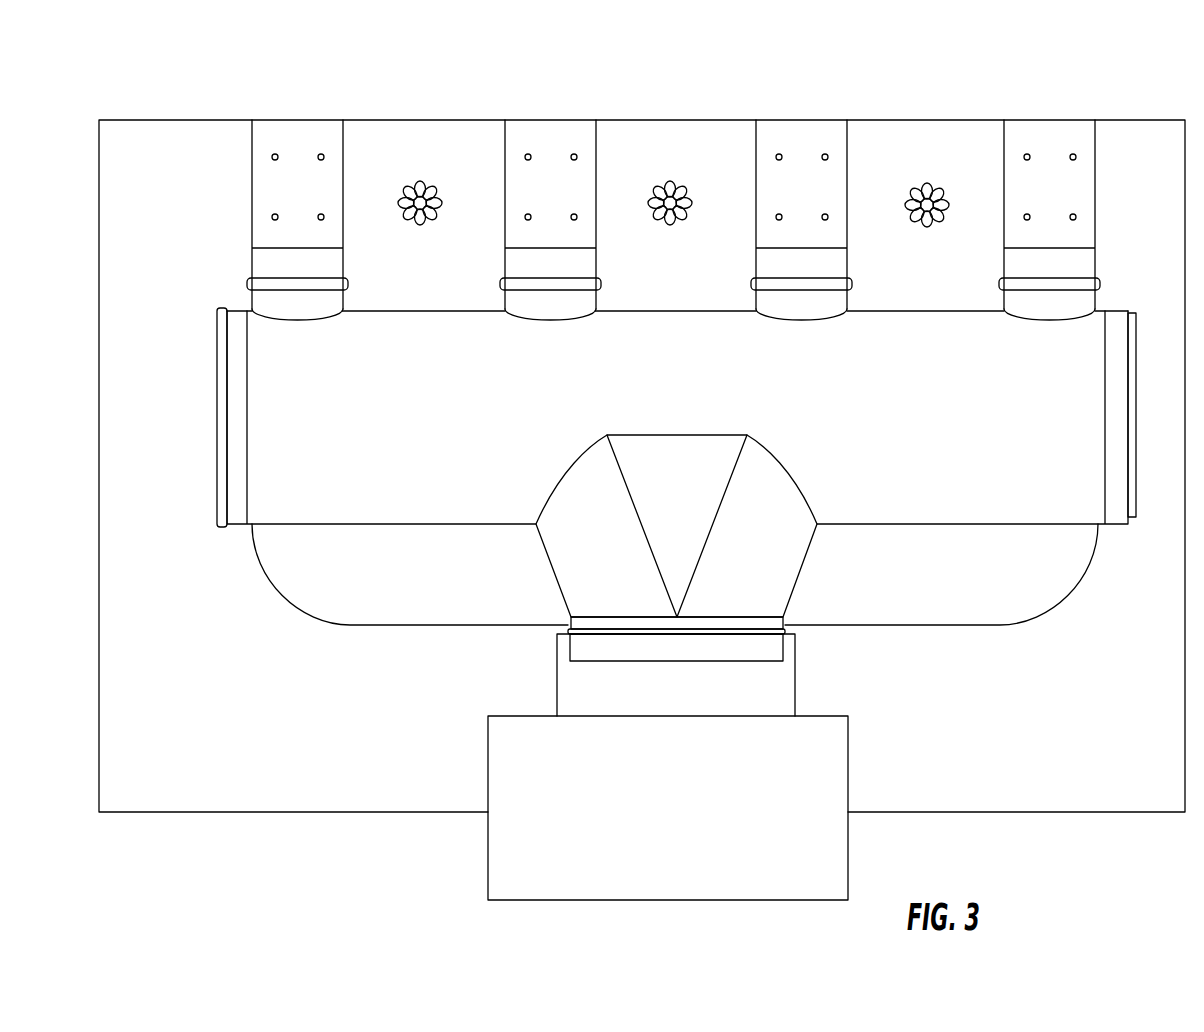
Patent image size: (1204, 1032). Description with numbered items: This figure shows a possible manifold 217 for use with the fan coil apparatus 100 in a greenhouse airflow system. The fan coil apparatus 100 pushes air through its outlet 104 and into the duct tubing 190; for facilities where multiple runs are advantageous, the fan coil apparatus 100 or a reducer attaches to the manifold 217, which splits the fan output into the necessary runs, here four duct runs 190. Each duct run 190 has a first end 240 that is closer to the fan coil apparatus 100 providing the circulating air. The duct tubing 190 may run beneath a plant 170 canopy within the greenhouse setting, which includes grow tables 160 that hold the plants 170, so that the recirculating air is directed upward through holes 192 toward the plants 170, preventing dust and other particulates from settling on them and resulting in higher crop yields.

The fan coil apparatus 100 is at (783, 887).
The outlet 104 is at (798, 662).
The grow tables 160 is at (170, 167).
The plants 170 is at (691, 199).
The duct tubing 190 is at (343, 157).
The holes 192 is at (275, 153).
The manifold 217 is at (415, 515).
The first end 240 is at (848, 233).